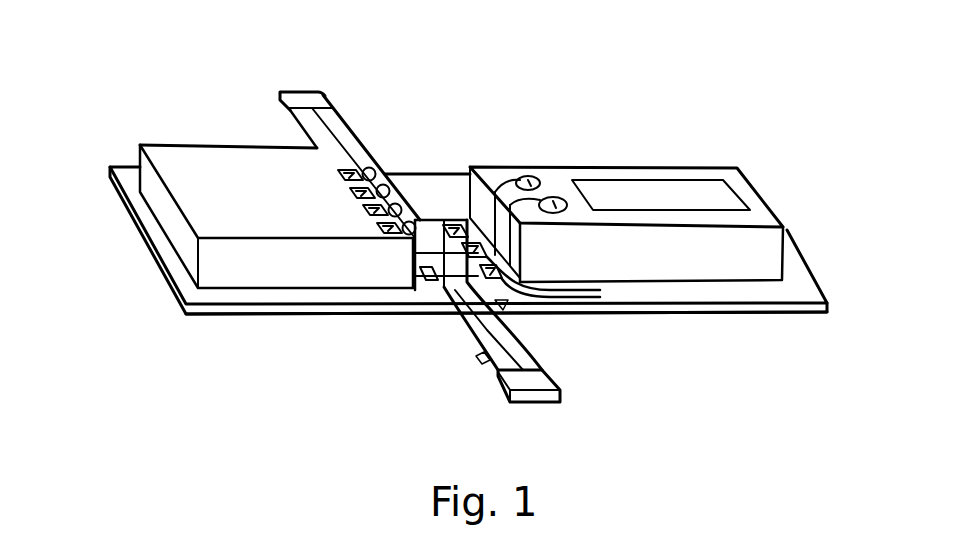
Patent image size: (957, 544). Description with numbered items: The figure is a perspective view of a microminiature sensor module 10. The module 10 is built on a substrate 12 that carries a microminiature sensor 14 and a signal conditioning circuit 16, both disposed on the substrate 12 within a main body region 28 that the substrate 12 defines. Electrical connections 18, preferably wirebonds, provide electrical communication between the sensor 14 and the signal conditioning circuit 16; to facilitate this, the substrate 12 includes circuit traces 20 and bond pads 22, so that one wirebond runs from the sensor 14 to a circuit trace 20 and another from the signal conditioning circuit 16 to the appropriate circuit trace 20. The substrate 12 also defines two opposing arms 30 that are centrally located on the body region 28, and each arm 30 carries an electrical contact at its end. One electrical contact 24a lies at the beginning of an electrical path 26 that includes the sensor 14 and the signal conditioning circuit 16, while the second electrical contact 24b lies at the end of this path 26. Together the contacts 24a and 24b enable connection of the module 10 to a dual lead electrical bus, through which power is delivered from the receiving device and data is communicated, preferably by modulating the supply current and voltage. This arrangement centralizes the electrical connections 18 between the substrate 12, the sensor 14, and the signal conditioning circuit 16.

The microminiature sensor module 10 is at (138, 58).
The substrate 12 is at (795, 292).
The microminiature sensor 14 is at (680, 172).
The signal conditioning circuit 16 is at (184, 158).
The electrical connections 18 is at (433, 218).
The circuit traces 20 is at (503, 312).
The bond pads 22 is at (443, 301).
The first electrical contact 24a is at (307, 98).
The second electrical contact 24b is at (562, 392).
The electrical path 26 is at (335, 128).
The main body region 28 is at (263, 318).
The arms 30 is at (289, 114).